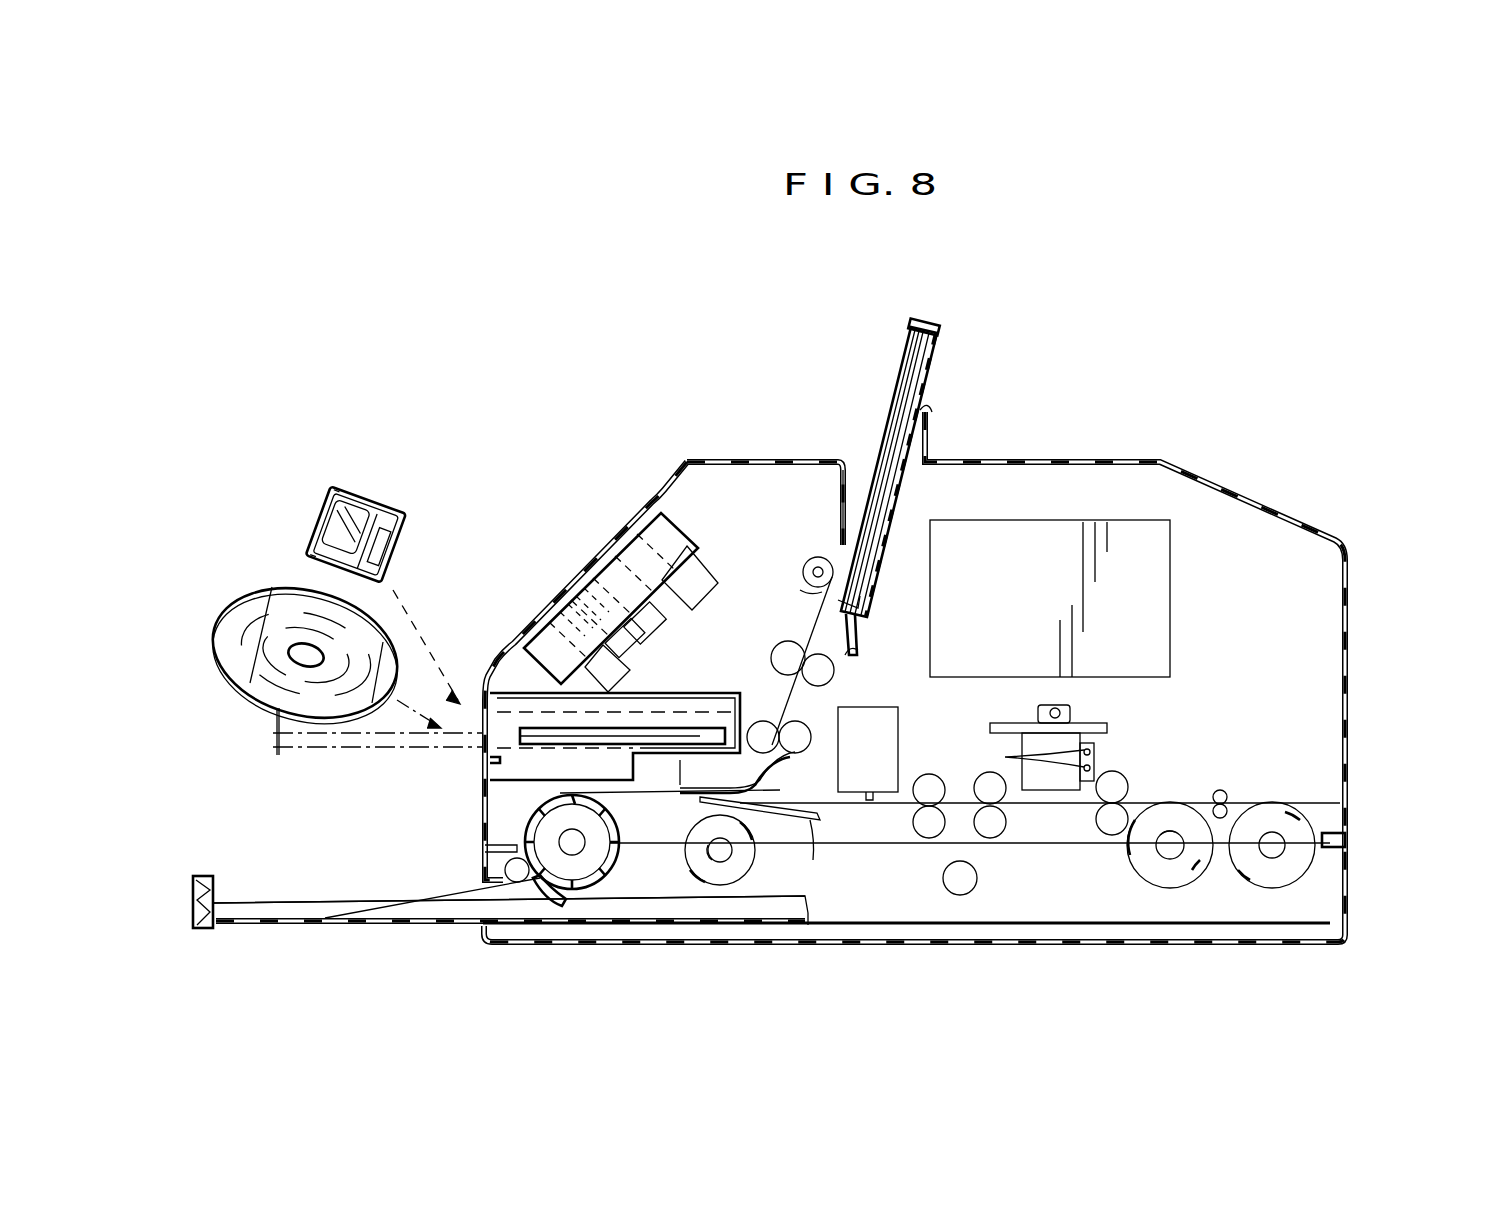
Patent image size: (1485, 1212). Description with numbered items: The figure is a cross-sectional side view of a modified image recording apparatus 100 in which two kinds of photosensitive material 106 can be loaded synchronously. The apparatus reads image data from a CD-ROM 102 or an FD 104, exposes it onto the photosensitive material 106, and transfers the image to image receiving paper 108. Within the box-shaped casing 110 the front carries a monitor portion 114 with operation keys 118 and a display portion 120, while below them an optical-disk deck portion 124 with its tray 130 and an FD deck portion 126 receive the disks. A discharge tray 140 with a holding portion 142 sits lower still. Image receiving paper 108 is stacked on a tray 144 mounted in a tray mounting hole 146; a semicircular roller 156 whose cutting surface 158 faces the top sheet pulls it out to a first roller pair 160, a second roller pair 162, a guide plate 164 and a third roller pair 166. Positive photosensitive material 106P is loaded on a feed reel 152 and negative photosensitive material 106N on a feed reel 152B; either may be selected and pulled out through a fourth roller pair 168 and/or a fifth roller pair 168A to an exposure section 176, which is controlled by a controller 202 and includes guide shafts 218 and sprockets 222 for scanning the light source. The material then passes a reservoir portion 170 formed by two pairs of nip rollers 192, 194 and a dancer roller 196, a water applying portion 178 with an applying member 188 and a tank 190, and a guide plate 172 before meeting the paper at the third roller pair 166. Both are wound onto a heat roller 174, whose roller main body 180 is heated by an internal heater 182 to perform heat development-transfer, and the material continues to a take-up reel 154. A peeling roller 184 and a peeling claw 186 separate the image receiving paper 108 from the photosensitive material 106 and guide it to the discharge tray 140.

The image recording apparatus 100 is at (647, 428).
The CD-ROM 102 is at (262, 587).
The FD 104 is at (387, 505).
The photosensitive material 106 is at (1140, 803).
The positive photosensitive material 106P is at (1192, 863).
The negative photosensitive material 106N is at (1290, 872).
The image receiving paper 108 is at (900, 358).
The casing 110 is at (763, 460).
The monitor portion 114 is at (655, 525).
The operation keys 118 is at (632, 675).
The display portion 120 is at (705, 558).
The optical-disk deck portion 124 is at (475, 758).
The FD deck portion 126 is at (510, 675).
The tray 130 is at (480, 716).
The discharge tray 140 is at (322, 926).
The holding portion 142 is at (214, 900).
The tray 144 is at (935, 355).
The tray mounting hole 146 is at (846, 468).
The feed reel 152 is at (1172, 858).
The feed reel 152B is at (1282, 845).
The take-up reel 154 is at (733, 862).
The semicircular roller 156 is at (812, 557).
The cutting surface 158 is at (802, 590).
The first roller pair 160 is at (838, 664).
The second roller pair 162 is at (810, 724).
The guide plate 164 is at (780, 762).
The third roller pair 166 is at (682, 772).
The fourth roller pair 168 is at (1118, 773).
The fifth roller pair 168A is at (1222, 790).
The reservoir portion 170 is at (958, 921).
The guide plate 172 is at (812, 835).
The heat roller 174 is at (615, 870).
The exposure section 176 is at (1092, 720).
The water applying portion 178 is at (900, 732).
The roller main body 180 is at (586, 893).
The heater 182 is at (560, 835).
The peeling roller 184 is at (505, 865).
The peeling claw 186 is at (540, 905).
The applying member 188 is at (882, 802).
The tank 190 is at (887, 758).
The nip rollers 192 is at (997, 822).
The nip rollers 194 is at (930, 828).
The dancer roller 196 is at (965, 880).
The controller 202 is at (1035, 520).
The guide shafts 218 is at (1019, 761).
The sprockets 222 is at (1048, 705).